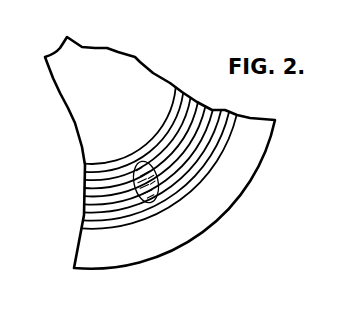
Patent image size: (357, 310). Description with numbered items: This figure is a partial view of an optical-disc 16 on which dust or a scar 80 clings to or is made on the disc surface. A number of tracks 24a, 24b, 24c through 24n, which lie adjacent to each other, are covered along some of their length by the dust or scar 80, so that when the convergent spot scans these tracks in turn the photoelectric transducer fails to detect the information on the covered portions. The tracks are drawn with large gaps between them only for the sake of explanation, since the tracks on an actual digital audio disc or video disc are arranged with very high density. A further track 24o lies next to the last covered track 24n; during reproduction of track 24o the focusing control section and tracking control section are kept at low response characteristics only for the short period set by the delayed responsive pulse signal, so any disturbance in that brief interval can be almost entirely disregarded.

The optical-disc 16 is at (148, 77).
The track 24a is at (87, 177).
The track 24b is at (85, 186).
The track 24c is at (82, 193).
The track 24n is at (80, 213).
The track 24o is at (83, 225).
The dust or scar 80 is at (137, 167).